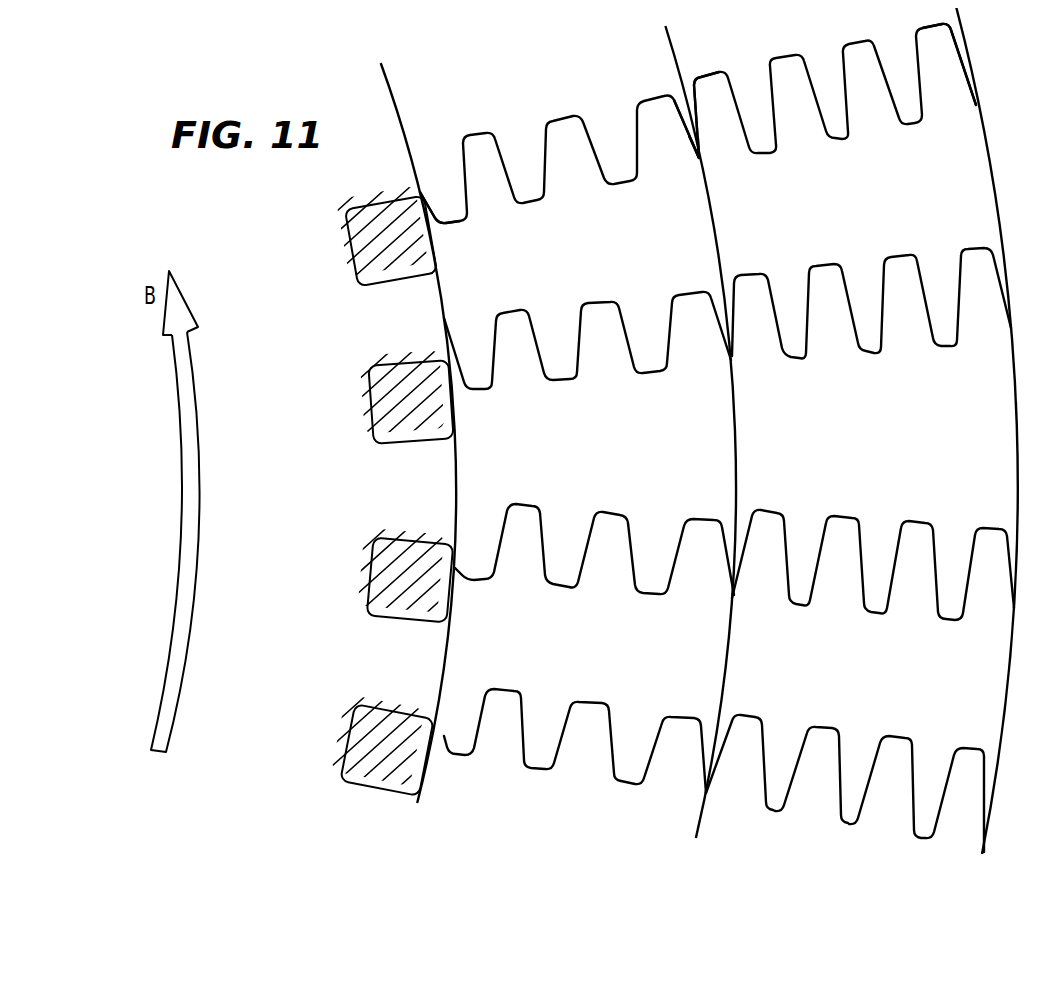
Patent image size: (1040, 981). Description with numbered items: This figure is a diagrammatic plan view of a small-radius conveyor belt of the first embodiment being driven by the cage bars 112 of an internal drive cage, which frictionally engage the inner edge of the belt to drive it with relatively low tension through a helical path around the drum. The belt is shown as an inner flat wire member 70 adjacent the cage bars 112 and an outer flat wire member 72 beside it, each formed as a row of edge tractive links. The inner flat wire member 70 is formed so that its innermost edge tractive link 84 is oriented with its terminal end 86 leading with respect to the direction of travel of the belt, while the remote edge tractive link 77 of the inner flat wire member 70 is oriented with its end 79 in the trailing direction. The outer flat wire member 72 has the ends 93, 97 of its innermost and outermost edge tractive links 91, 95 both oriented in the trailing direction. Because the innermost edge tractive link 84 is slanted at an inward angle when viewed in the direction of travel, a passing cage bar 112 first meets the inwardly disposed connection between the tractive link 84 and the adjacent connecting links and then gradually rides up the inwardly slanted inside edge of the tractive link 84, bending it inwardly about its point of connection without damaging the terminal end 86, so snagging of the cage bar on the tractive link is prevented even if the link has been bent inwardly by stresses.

The inner flat wire member 70 is at (598, 301).
The outer flat wire member 72 is at (838, 146).
The remote edge tractive link 77 is at (682, 120).
The end of remote edge tractive link 79 is at (701, 163).
The innermost edge tractive link 84 is at (422, 183).
The terminal end 86 is at (410, 150).
The innermost edge tractive link of outer flat wire member 91 is at (699, 100).
The end of innermost edge tractive link of outer flat wire member 93 is at (703, 161).
The outermost edge tractive link of outer flat wire member 95 is at (955, 50).
The end of outermost edge tractive link of outer flat wire member 97 is at (977, 110).
The cage bars 112 is at (355, 265).